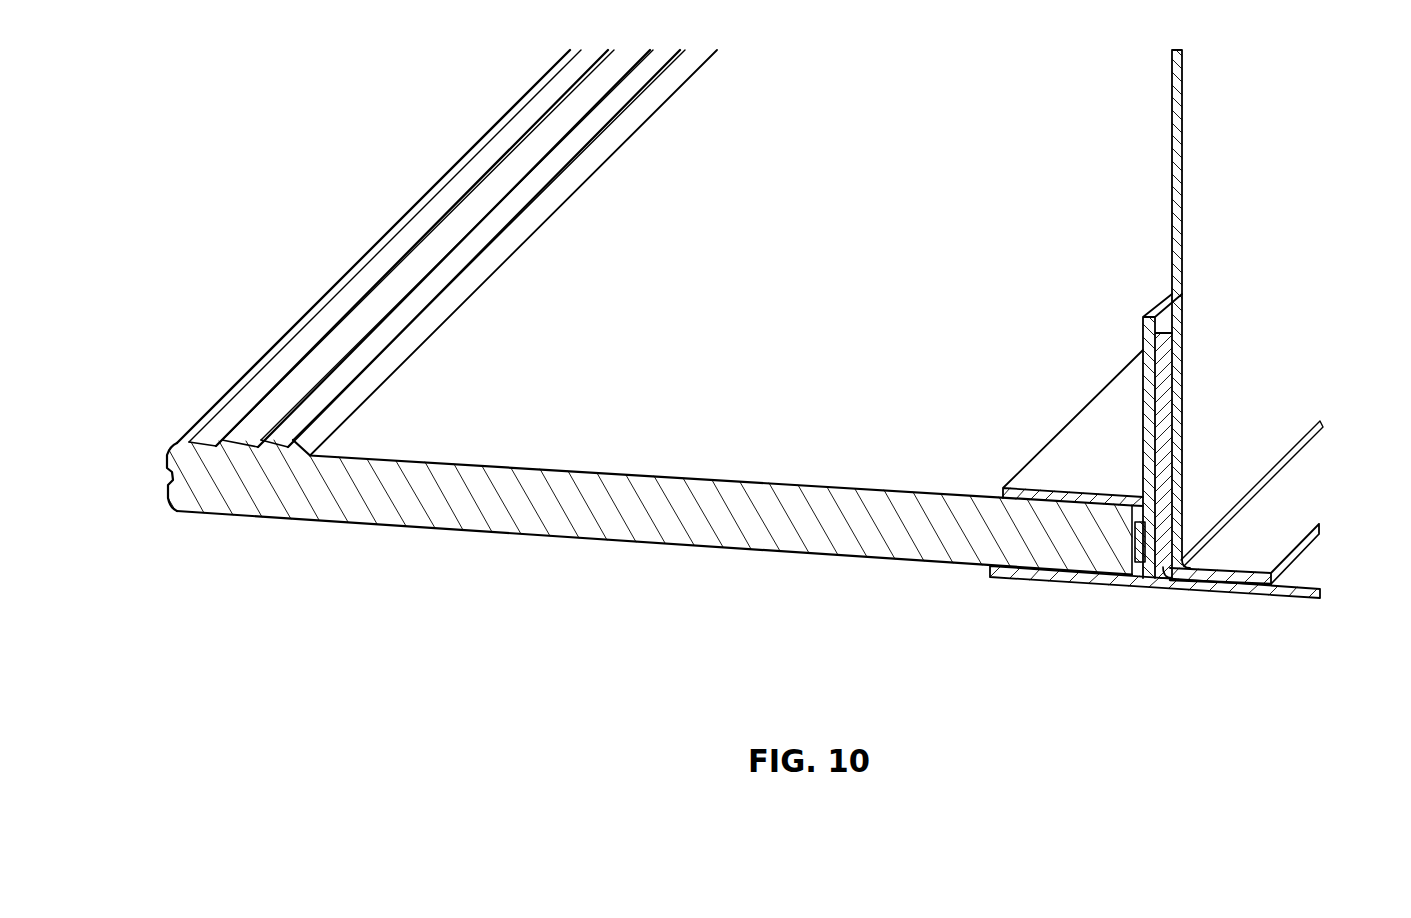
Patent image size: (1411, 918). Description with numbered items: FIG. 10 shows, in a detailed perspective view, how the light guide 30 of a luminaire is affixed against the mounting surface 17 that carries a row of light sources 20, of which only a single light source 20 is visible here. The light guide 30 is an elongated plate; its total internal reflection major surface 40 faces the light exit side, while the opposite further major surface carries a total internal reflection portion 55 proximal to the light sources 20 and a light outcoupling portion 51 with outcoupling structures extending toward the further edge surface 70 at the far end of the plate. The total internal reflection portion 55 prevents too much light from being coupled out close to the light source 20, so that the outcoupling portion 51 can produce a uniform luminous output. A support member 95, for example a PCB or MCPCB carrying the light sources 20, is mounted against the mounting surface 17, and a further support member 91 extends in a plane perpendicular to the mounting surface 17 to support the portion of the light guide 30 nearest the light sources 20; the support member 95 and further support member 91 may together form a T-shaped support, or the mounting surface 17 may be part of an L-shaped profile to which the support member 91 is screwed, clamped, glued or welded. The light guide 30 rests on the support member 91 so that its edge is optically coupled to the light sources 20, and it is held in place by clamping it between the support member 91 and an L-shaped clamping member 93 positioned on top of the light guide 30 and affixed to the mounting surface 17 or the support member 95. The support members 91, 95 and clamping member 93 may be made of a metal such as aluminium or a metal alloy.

The mounting surface 17 is at (1232, 217).
The light source 20 is at (1148, 545).
The light guide 30 is at (655, 520).
The total internal reflection major surface 40 is at (1144, 500).
The light outcoupling portion 51 is at (320, 320).
The total internal reflection portion 55 is at (848, 345).
The further edge surface 70 is at (165, 461).
The further support member 91 is at (1240, 590).
The L-shaped clamping member 93 is at (1085, 450).
The support member 95 is at (1163, 576).